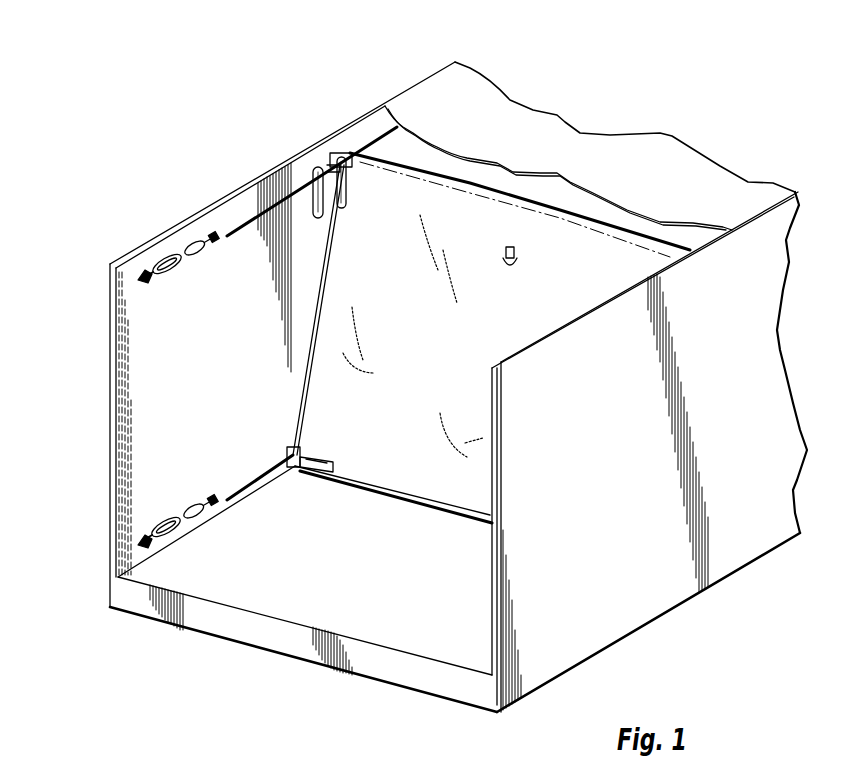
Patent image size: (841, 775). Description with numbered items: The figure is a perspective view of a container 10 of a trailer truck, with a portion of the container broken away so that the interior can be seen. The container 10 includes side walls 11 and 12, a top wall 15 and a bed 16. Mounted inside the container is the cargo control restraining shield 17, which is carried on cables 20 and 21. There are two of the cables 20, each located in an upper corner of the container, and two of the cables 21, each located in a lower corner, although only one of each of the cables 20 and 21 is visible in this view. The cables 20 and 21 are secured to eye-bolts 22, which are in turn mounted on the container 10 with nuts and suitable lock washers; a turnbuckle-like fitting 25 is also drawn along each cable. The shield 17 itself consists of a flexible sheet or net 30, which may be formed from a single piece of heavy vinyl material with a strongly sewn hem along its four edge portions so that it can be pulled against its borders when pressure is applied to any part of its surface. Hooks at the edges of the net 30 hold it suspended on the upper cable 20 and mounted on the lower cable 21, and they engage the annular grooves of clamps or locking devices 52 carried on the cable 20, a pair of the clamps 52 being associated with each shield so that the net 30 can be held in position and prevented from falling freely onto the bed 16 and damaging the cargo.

The container 10 is at (643, 80).
The side wall 11 is at (128, 363).
The side wall 12 is at (678, 548).
The top wall 15 is at (500, 100).
The bed 16 is at (378, 592).
The cargo control restraining shield 17 is at (582, 207).
The cable 20 is at (250, 208).
The cable 21 is at (250, 483).
The eye-bolt 22 is at (140, 278).
The turnbuckle 25 is at (163, 257).
The flexible sheet or net 30 is at (408, 342).
The clamp or locking device 52 is at (357, 222).